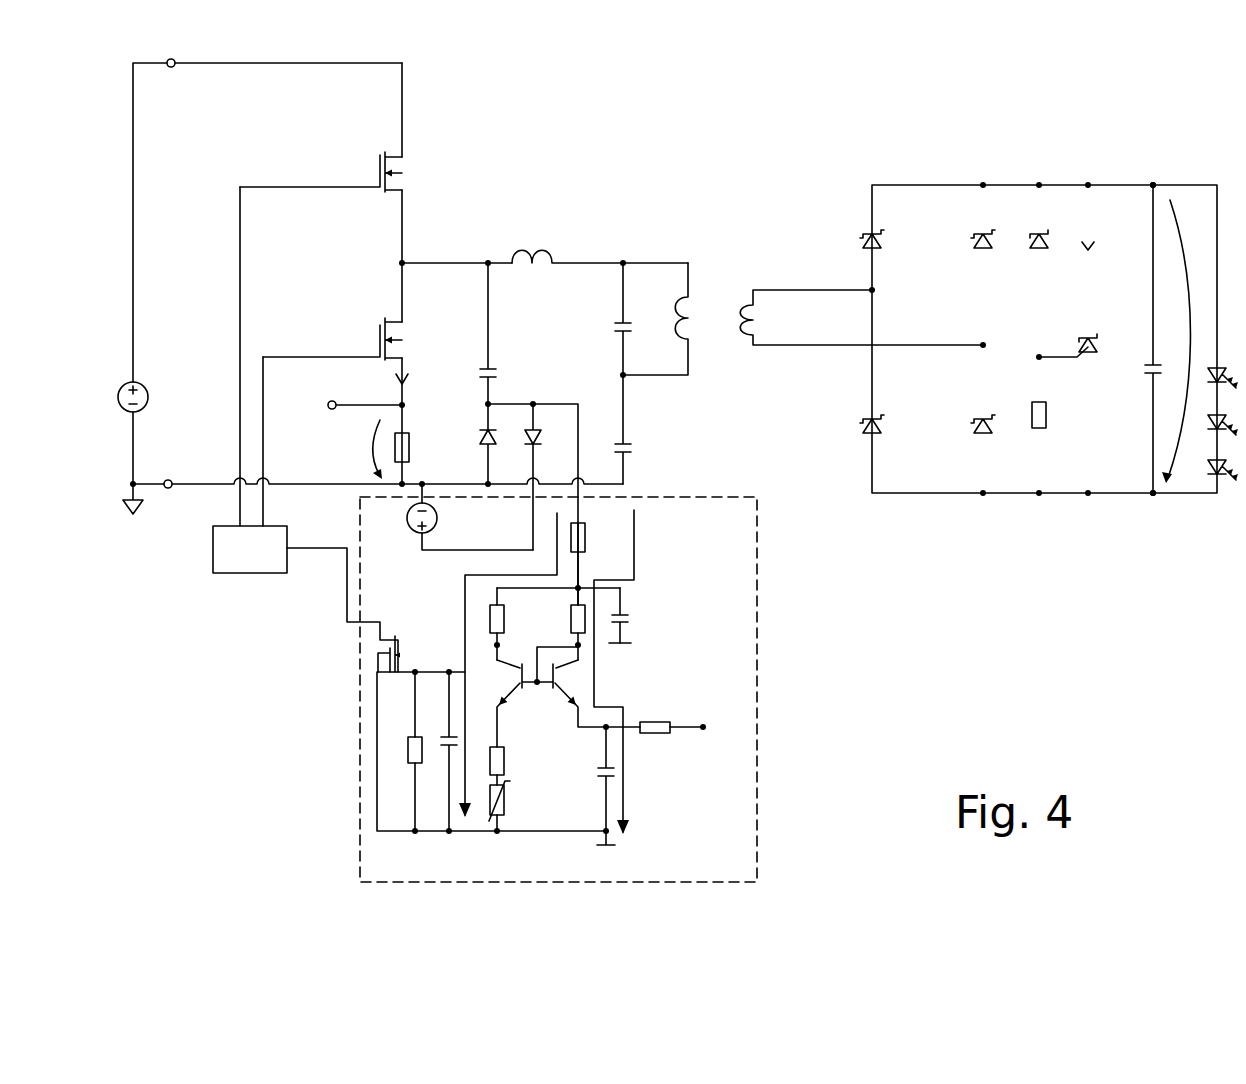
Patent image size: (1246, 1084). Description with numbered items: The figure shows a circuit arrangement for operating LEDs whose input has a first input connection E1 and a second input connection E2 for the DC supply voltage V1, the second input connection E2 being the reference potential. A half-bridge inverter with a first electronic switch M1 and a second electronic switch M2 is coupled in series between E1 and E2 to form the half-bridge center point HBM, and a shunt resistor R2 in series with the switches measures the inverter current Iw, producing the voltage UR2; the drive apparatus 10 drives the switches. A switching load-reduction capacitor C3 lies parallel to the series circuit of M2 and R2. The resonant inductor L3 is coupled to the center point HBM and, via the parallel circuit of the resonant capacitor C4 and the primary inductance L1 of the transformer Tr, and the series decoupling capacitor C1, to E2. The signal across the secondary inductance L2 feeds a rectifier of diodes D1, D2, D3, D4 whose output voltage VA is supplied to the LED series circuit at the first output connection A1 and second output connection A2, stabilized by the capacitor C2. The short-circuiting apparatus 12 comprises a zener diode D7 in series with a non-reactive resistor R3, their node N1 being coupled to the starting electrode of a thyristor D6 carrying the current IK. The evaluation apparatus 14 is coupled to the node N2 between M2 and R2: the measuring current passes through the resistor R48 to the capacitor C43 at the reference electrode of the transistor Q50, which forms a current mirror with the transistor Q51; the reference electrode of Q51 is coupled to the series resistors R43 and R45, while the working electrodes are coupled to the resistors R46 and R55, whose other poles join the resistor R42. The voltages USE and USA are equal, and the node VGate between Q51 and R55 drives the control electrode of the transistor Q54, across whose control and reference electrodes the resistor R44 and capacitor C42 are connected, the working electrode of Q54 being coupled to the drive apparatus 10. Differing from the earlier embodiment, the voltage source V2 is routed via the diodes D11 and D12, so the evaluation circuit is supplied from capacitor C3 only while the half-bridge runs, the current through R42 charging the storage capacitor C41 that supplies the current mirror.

The drive apparatus 10 is at (250, 566).
The short-circuiting apparatus 12 is at (1098, 510).
The evaluation apparatus 14 is at (757, 617).
The first electronic switch M1 is at (336, 172).
The second electronic switch M2 is at (348, 339).
The first input connection E1 is at (178, 54).
The second input connection E2 is at (408, 558).
The DC supply voltage V1 is at (141, 388).
The voltage source V2 is at (470, 515).
The half-bridge center point HBM is at (455, 253).
The resonant inductor L3 is at (600, 246).
The transformer Tr is at (671, 319).
The primary inductance L1 is at (671, 319).
The secondary inductance L2 is at (861, 317).
The decoupling capacitor C1 is at (634, 429).
The capacitor C2 is at (1164, 339).
The switching load-reduction capacitor C3 is at (500, 333).
The resonant capacitor C4 is at (634, 319).
The diode D11 is at (474, 444).
The diode D12 is at (550, 477).
The shunt resistor R2 is at (417, 447).
The node N2 is at (517, 566).
The current through the inverter Iw is at (411, 382).
The voltage across the shunt resistor UR2 is at (360, 449).
The transistor Q54 is at (409, 654).
The transistor Q51 is at (512, 703).
The transistor Q50 is at (596, 693).
The resistor R42 is at (598, 537).
The resistor R43 is at (485, 762).
The resistor R44 is at (402, 751).
The resistor R45 is at (519, 806).
The resistor R46 is at (556, 606).
The resistor R48 is at (671, 716).
The resistor R55 is at (487, 624).
The storage capacitor C41 is at (640, 615).
The capacitor C42 is at (440, 751).
The capacitor C43 is at (586, 786).
The voltage VSA USA is at (489, 665).
The voltage VSE USE is at (614, 672).
The gate node voltage VGate is at (450, 672).
The diode D1 is at (881, 416).
The diode D2 is at (882, 232).
The diode D3 is at (992, 416).
The diode D4 is at (992, 232).
The thyristor D6 is at (1098, 329).
The zener diode D7 is at (1049, 232).
The current in the short-circuiting apparatus IK is at (1098, 252).
The node N1 is at (1048, 357).
The non-reactive resistor R3 is at (1052, 415).
The first output connection A1 is at (1154, 175).
The second output connection A2 is at (1154, 506).
The output voltage VA is at (1186, 341).